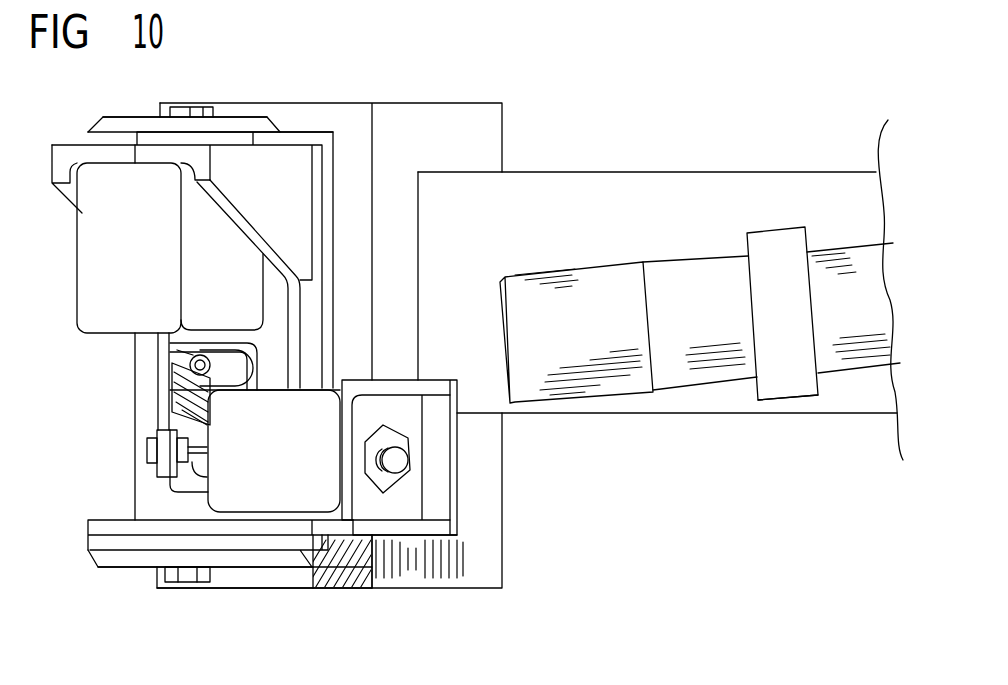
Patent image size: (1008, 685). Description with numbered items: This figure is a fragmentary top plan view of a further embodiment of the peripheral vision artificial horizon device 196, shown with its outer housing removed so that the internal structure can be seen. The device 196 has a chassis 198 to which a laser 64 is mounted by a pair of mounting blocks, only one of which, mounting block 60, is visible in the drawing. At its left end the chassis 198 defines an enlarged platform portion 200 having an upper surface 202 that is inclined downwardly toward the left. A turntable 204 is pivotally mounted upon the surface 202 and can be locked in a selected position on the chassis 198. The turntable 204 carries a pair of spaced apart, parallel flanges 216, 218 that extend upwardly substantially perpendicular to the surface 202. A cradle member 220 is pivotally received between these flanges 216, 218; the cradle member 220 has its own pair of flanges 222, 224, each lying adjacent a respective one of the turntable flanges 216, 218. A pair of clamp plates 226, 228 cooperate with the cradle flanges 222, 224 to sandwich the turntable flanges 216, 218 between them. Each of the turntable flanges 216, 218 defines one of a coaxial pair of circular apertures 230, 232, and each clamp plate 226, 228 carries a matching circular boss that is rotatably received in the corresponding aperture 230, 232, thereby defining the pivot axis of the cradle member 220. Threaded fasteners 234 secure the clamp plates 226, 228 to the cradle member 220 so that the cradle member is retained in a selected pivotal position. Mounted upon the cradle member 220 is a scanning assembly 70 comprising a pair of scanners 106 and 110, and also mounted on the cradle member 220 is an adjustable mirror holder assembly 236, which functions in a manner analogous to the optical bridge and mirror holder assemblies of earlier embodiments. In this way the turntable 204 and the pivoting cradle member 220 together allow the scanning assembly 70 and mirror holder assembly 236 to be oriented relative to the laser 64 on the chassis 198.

The mounting block 60 is at (800, 343).
The laser 64 is at (876, 330).
The scanning assembly 70 is at (128, 428).
The scanner 106 is at (296, 459).
The scanner 110 is at (146, 262).
The peripheral vision artificial horizon device 196 is at (591, 556).
The chassis 198 is at (763, 403).
The enlarged platform portion 200 is at (417, 608).
The upper surface 202 is at (282, 577).
The turntable 204 is at (308, 138).
The flange 216 is at (227, 545).
The flange 218 is at (200, 138).
The cradle member 220 is at (290, 369).
The flange 222 is at (121, 528).
The flange 224 is at (82, 155).
The clamp plate 226 is at (147, 558).
The clamp plate 228 is at (293, 92).
The circular aperture 230 is at (257, 553).
The circular aperture 232 is at (248, 143).
The threaded fasteners 234 is at (193, 110).
The adjustable mirror holder assembly 236 is at (264, 349).